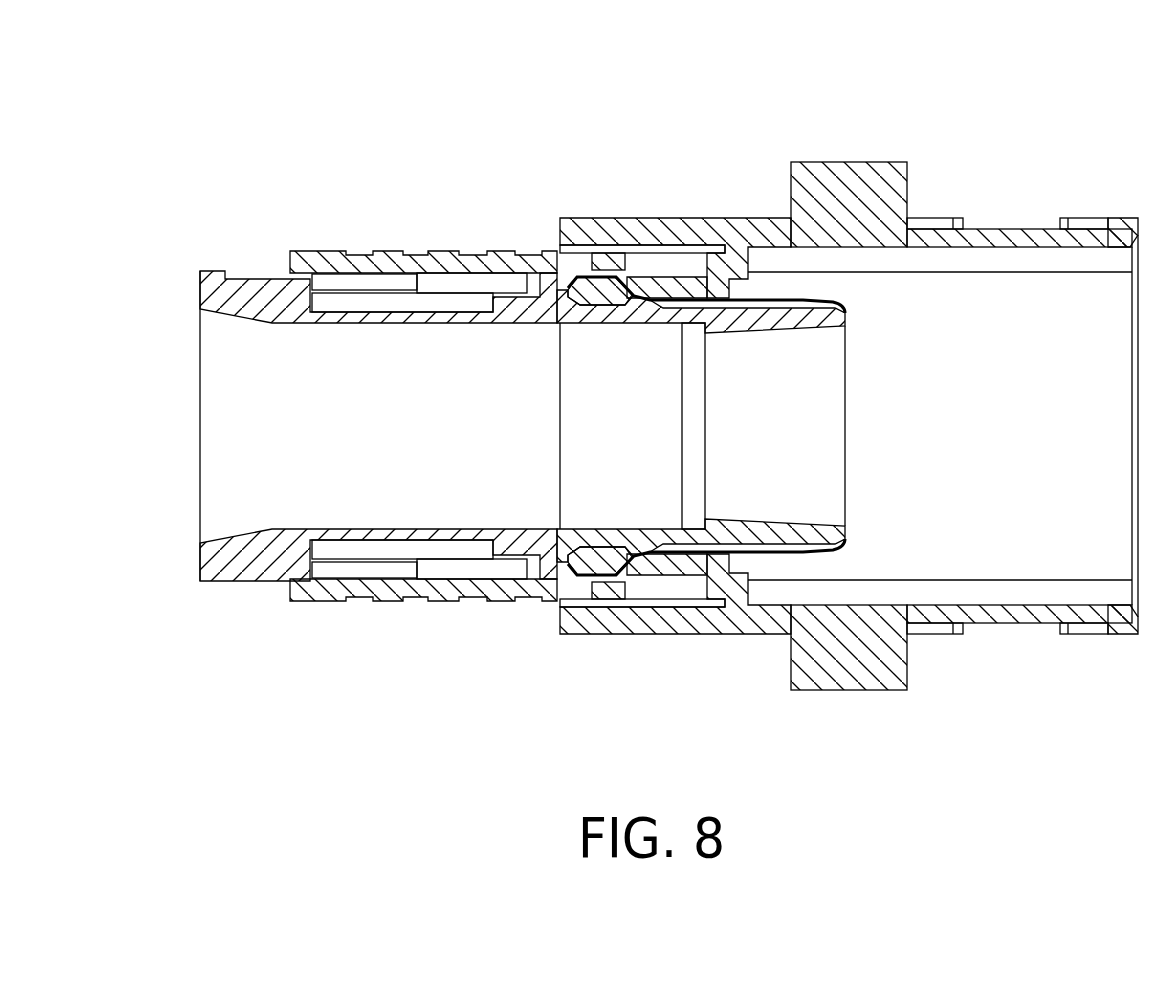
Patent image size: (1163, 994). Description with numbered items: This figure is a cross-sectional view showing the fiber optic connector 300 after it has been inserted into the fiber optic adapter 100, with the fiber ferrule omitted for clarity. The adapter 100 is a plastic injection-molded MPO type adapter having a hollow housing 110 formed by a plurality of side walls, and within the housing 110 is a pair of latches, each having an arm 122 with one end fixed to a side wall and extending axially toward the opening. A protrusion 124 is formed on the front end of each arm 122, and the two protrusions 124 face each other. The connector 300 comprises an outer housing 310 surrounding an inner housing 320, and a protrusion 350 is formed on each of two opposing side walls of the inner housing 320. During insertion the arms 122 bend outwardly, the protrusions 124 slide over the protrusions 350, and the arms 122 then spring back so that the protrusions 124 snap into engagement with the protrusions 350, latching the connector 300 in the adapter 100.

The fiber optic adapter 100 is at (954, 118).
The housing 110 is at (760, 227).
The arm 122 is at (683, 282).
The protrusion 124 is at (598, 287).
The fiber optic connector 300 is at (413, 144).
The outer housing 310 is at (332, 262).
The inner housing 320 is at (268, 558).
The protrusion 350 is at (645, 303).